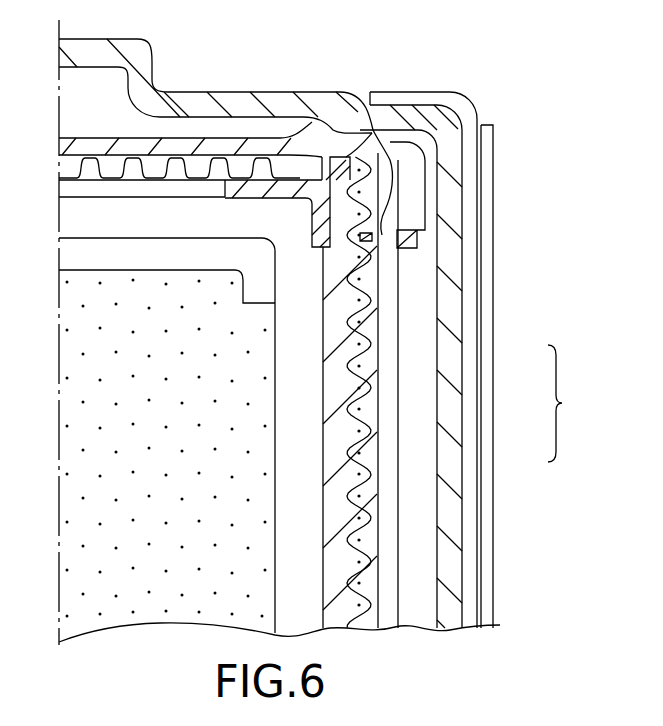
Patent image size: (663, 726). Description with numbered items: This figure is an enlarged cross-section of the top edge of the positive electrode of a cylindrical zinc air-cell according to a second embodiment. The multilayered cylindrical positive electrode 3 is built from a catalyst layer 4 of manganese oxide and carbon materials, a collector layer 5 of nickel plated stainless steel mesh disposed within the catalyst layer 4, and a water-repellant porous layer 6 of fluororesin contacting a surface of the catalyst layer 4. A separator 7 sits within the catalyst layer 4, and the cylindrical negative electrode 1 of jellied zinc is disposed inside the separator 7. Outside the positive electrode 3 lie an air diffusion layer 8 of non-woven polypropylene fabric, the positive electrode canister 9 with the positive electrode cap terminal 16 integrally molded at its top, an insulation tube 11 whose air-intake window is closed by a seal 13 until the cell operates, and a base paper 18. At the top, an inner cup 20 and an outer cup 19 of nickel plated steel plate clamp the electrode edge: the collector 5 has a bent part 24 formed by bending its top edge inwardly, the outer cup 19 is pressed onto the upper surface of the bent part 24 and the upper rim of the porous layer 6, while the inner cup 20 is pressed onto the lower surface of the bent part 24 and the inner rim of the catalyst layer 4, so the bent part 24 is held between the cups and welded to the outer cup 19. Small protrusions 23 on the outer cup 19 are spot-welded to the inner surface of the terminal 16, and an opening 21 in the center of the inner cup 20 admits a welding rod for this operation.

The negative electrode 1 is at (263, 597).
The positive electrode 3 is at (567, 403).
The catalyst layer 4 is at (345, 497).
The collector layer 5 is at (362, 428).
The water-repellant porous layer 6 is at (390, 362).
The separator 7 is at (310, 553).
The air diffusion layer 8 is at (423, 288).
The positive electrode canister 9 is at (457, 322).
The insulation tube 11 is at (473, 158).
The seal 13 is at (490, 184).
The positive electrode cap terminal 16 is at (217, 92).
The base paper 18 is at (85, 260).
The outer cup 19 is at (228, 148).
The inner cup 20 is at (330, 238).
The opening 21 is at (135, 192).
The small protrusions 23 is at (353, 92).
The bent part 24 is at (285, 120).